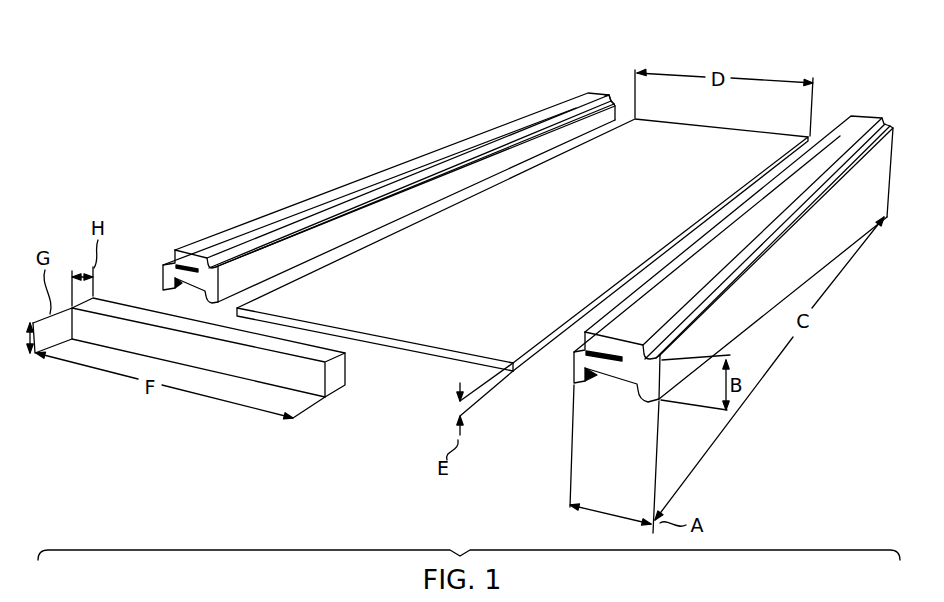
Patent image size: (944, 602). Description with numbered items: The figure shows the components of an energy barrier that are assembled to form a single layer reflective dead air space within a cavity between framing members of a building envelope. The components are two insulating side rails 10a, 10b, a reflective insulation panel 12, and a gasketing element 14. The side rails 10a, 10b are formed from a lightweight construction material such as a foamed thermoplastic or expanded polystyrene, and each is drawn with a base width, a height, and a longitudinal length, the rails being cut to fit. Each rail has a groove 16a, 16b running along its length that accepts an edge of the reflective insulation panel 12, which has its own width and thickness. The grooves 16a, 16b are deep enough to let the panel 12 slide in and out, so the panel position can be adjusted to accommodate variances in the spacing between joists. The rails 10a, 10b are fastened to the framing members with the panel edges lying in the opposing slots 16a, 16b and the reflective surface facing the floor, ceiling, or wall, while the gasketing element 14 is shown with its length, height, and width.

The insulating side rail 10a is at (168, 258).
The insulating side rail 10b is at (868, 110).
The reflective insulation panel 12 is at (455, 250).
The gasketing element 14 is at (334, 381).
The groove 16a is at (614, 99).
The groove 16b is at (570, 348).